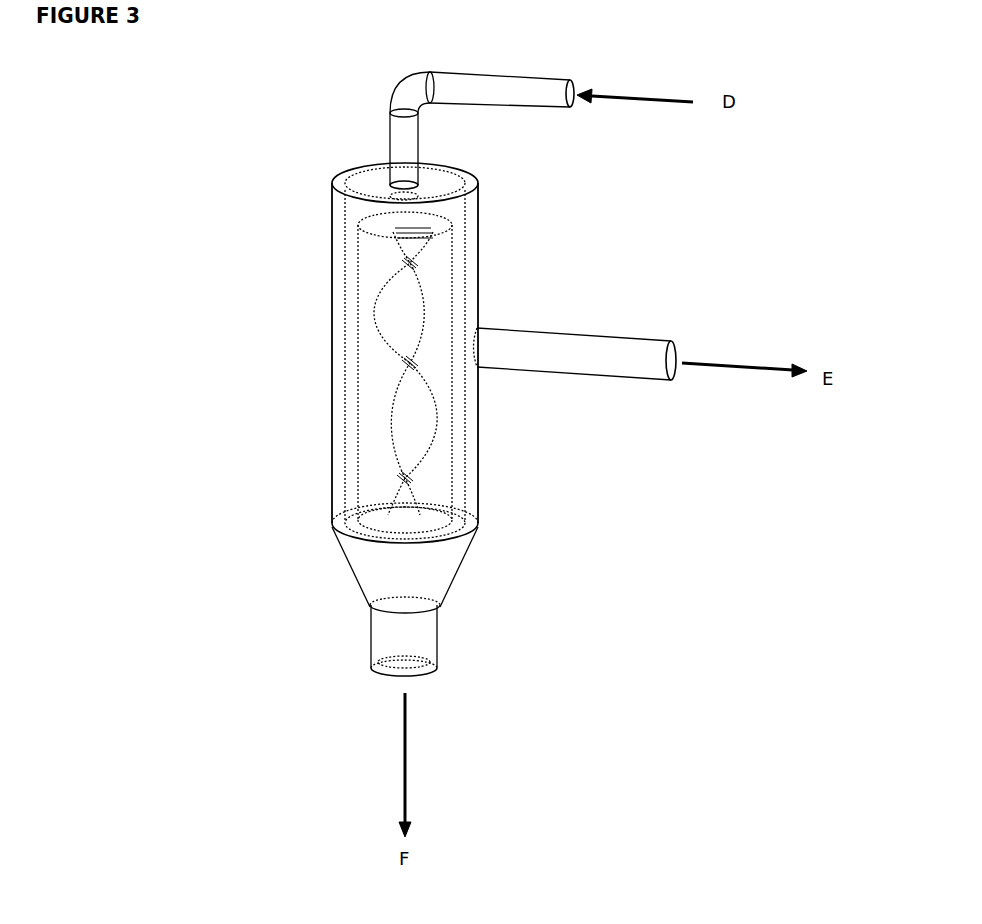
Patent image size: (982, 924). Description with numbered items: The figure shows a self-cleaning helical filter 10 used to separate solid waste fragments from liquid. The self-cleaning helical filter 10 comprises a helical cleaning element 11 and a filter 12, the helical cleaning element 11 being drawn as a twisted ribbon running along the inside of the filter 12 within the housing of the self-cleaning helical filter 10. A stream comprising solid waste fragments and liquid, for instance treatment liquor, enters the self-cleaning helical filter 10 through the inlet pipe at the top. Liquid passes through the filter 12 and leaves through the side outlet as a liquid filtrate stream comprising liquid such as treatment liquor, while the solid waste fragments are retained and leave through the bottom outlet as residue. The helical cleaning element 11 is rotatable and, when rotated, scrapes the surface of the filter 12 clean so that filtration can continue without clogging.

The self-cleaning helical filter 10 is at (331, 218).
The helical cleaning element 11 is at (388, 440).
The filter 12 is at (355, 278).